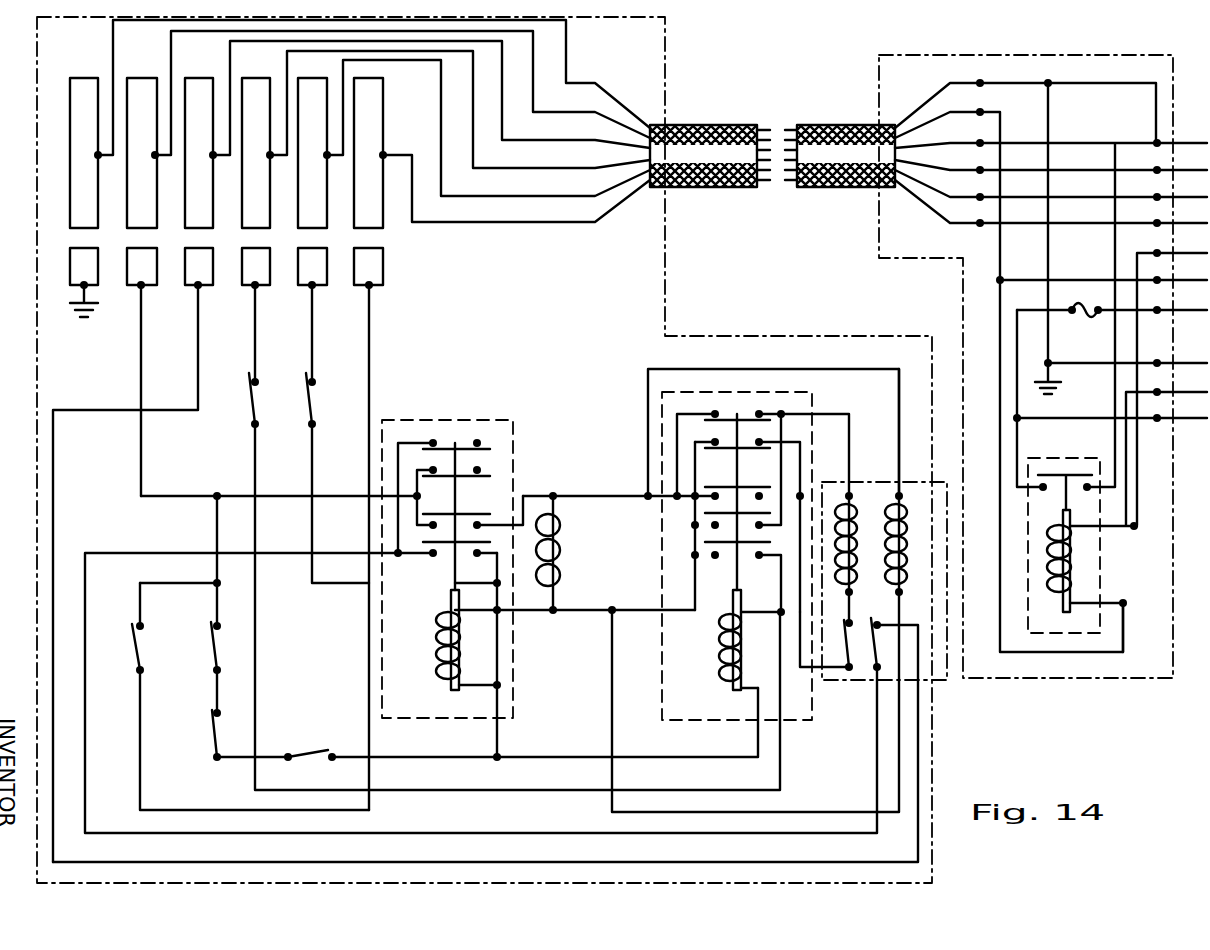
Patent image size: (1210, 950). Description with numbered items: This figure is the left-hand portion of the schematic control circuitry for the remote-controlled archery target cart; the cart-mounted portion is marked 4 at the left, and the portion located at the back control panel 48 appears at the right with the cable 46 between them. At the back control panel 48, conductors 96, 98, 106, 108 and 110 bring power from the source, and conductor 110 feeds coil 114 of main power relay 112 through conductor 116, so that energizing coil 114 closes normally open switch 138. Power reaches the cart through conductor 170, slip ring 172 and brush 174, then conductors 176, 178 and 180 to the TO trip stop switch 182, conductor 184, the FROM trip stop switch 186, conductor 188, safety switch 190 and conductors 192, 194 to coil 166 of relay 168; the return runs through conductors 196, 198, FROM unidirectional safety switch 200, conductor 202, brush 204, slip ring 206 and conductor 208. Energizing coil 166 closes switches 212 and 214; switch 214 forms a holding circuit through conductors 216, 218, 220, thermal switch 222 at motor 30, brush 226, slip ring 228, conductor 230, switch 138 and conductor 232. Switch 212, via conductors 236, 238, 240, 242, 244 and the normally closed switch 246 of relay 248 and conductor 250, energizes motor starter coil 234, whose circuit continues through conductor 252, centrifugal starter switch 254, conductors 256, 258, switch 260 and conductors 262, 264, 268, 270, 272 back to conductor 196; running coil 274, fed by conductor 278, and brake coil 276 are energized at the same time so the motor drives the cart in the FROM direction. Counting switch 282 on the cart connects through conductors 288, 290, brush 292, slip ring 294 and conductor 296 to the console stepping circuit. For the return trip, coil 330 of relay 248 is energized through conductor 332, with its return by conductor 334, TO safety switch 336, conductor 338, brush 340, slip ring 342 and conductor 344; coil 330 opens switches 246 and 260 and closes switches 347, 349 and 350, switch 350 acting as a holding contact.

The apparatus 4 is at (19, 481).
The motor 30 is at (876, 478).
The cable 46 is at (772, 112).
The back control panel 48 is at (1073, 687).
The conductor 96 is at (1070, 420).
The conductor 98 is at (1026, 308).
The conductor 106 is at (1101, 281).
The conductor 108 is at (1013, 655).
The conductor 110 is at (1125, 572).
The main power relay 112 is at (1080, 655).
The coil of relay 112 114 is at (1050, 570).
The conductor 116 is at (1135, 250).
The switch of relay 112 138 is at (1058, 469).
The coil of relay 168 166 is at (447, 660).
The relay 168 is at (516, 420).
The conductor 170 is at (553, 96).
The slip ring 172 is at (139, 77).
The brush 174 is at (157, 280).
The conductor 176 is at (138, 460).
The conductor 178 is at (216, 530).
The conductor 180 is at (216, 598).
The TO normally closed trip stop switch 182 is at (213, 652).
The conductor 184 is at (216, 694).
The FROM normally closed trip stop switch 186 is at (214, 738).
The conductor 188 is at (240, 758).
The normally closed safety switch 190 is at (323, 752).
The conductor 192 is at (440, 757).
The conductor 194 is at (498, 740).
The conductor 196 is at (491, 606).
The conductor 198 is at (337, 586).
The FROM unidirectional safety switch 200 is at (315, 420).
The conductor 202 is at (314, 368).
The brush 204 is at (328, 280).
The slip ring 206 is at (320, 76).
The conductor 208 is at (1101, 194).
The switch of relay 168 212 is at (473, 520).
The switch of relay 168 214 is at (448, 548).
The conductor 216 is at (498, 563).
The conductor 218 is at (413, 529).
The conductor 220 is at (280, 552).
The thermal switch 222 is at (870, 652).
The brush 226 is at (214, 280).
The slip ring 228 is at (206, 72).
The conductor 230 is at (567, 143).
The conductor 232 is at (1017, 447).
The motor starter coil 234 is at (858, 538).
The conductor 236 is at (281, 492).
The conductor 238 is at (535, 494).
The conductor 240 is at (610, 496).
The conductor 242 is at (664, 488).
The conductor 244 is at (675, 440).
The switch of relay 248 246 is at (730, 418).
The relay 248 is at (812, 392).
The conductor 250 is at (851, 419).
The conductor 252 is at (848, 624).
The centrifugal starter switch 254 is at (845, 633).
The conductor 256 is at (802, 671).
The conductor 258 is at (812, 448).
The switch 260 is at (757, 456).
The conductor 262 is at (693, 500).
The conductor 264 is at (693, 560).
The conductor 268 is at (643, 613).
The conductor 270 is at (585, 608).
The conductor 272 is at (533, 615).
The running coil 274 is at (903, 535).
The brake coil 276 is at (565, 548).
The conductor 278 is at (658, 369).
The counting switch 282 is at (132, 655).
The conductor 288 is at (165, 583).
The conductor 290 is at (138, 748).
The brush 292 is at (392, 270).
The slip ring 294 is at (386, 116).
The conductor 296 is at (516, 228).
The coil of relay 248 330 is at (725, 652).
The conductor 332 is at (662, 753).
The conductor 334 is at (495, 791).
The TO safety switch 336 is at (256, 420).
The conductor 338 is at (257, 368).
The brush 340 is at (271, 280).
The slip ring 342 is at (262, 68).
The conductor 344 is at (557, 168).
The switch of relay 248 347 is at (723, 486).
The switch of relay 248 349 is at (693, 532).
The switch of relay 248 350 is at (752, 548).